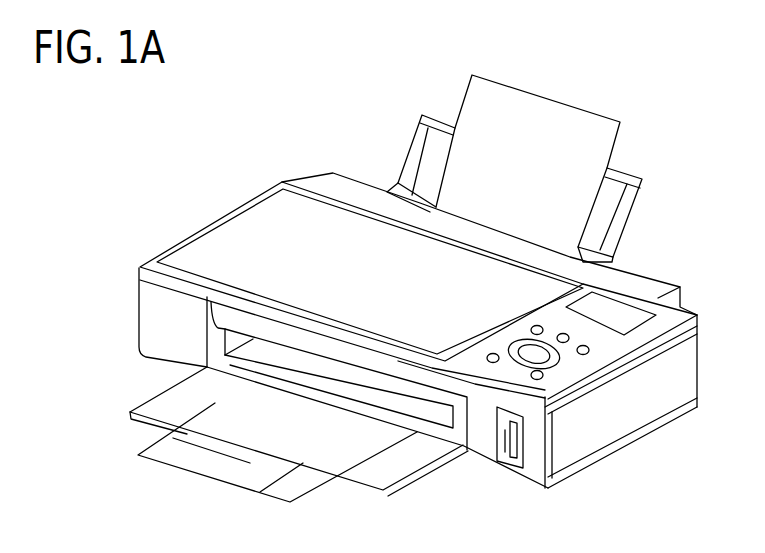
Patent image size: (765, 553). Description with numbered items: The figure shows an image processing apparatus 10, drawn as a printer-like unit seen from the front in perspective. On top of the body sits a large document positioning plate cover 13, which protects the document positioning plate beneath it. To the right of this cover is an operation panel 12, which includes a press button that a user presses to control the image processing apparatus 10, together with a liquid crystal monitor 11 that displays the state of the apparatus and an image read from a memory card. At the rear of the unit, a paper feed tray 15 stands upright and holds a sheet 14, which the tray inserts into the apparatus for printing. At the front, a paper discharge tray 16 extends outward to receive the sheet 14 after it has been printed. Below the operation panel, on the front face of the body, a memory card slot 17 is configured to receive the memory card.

The image processing apparatus 10 is at (362, 78).
The liquid crystal monitor 11 is at (623, 320).
The operation panel 12 is at (568, 367).
The document positioning plate cover 13 is at (270, 203).
The sheet 14 is at (556, 118).
The paper feed tray 15 is at (598, 226).
The paper discharge tray 16 is at (158, 404).
The memory card slot 17 is at (512, 466).